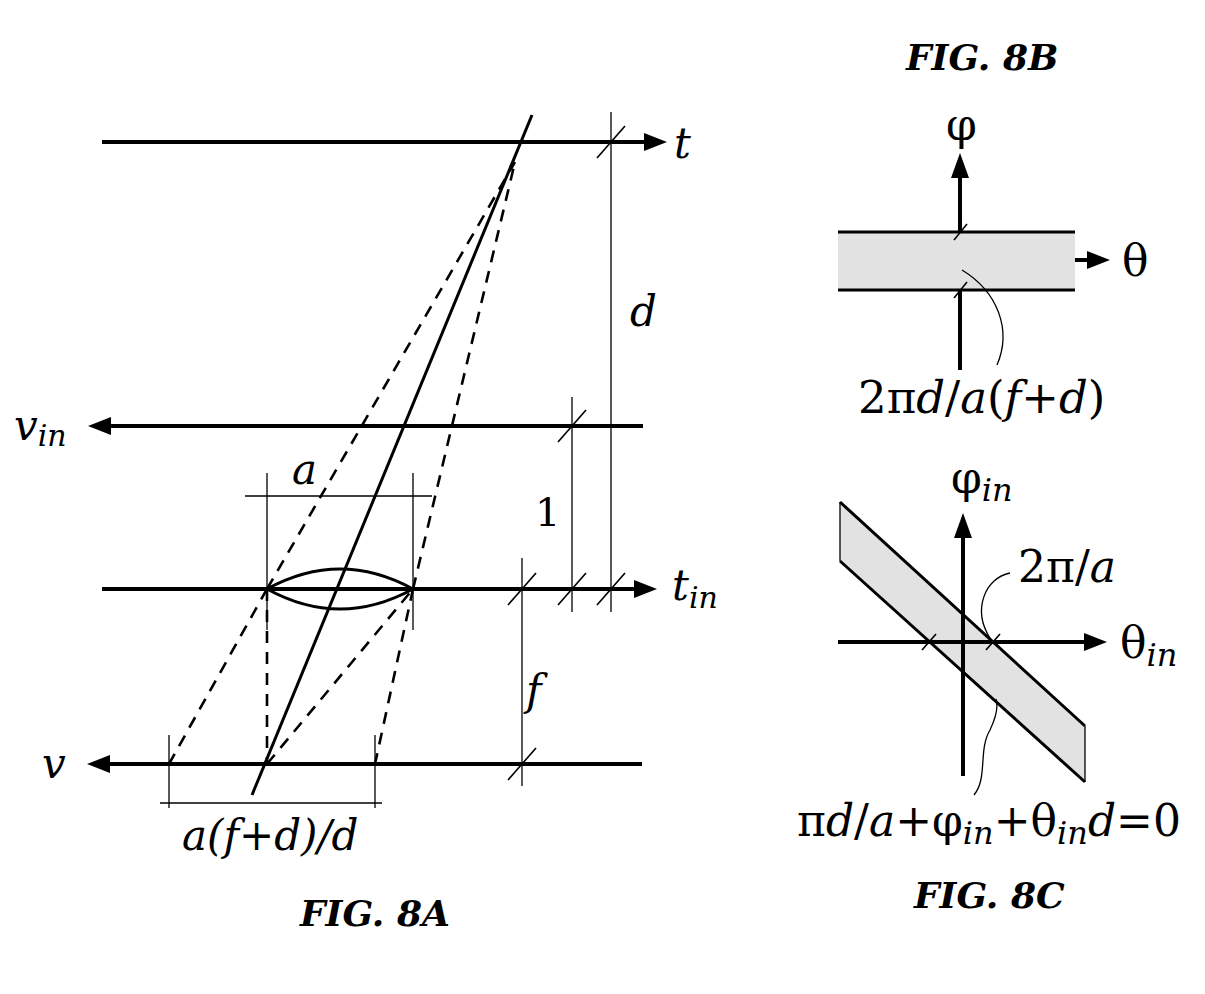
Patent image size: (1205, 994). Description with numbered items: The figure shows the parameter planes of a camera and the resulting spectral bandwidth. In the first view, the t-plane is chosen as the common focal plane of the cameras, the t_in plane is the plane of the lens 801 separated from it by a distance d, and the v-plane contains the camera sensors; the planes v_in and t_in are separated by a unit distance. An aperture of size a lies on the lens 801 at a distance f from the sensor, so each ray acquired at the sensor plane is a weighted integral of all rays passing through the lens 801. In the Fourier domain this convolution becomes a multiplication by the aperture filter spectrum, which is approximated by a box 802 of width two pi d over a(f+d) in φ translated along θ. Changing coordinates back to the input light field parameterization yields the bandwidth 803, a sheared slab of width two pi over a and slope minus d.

In FIG. 8A, the lens 801 is at (302, 571).
In FIG. 8B, the box 802 is at (1000, 232).
In FIG. 8C, the bandwidth 803 is at (843, 562).